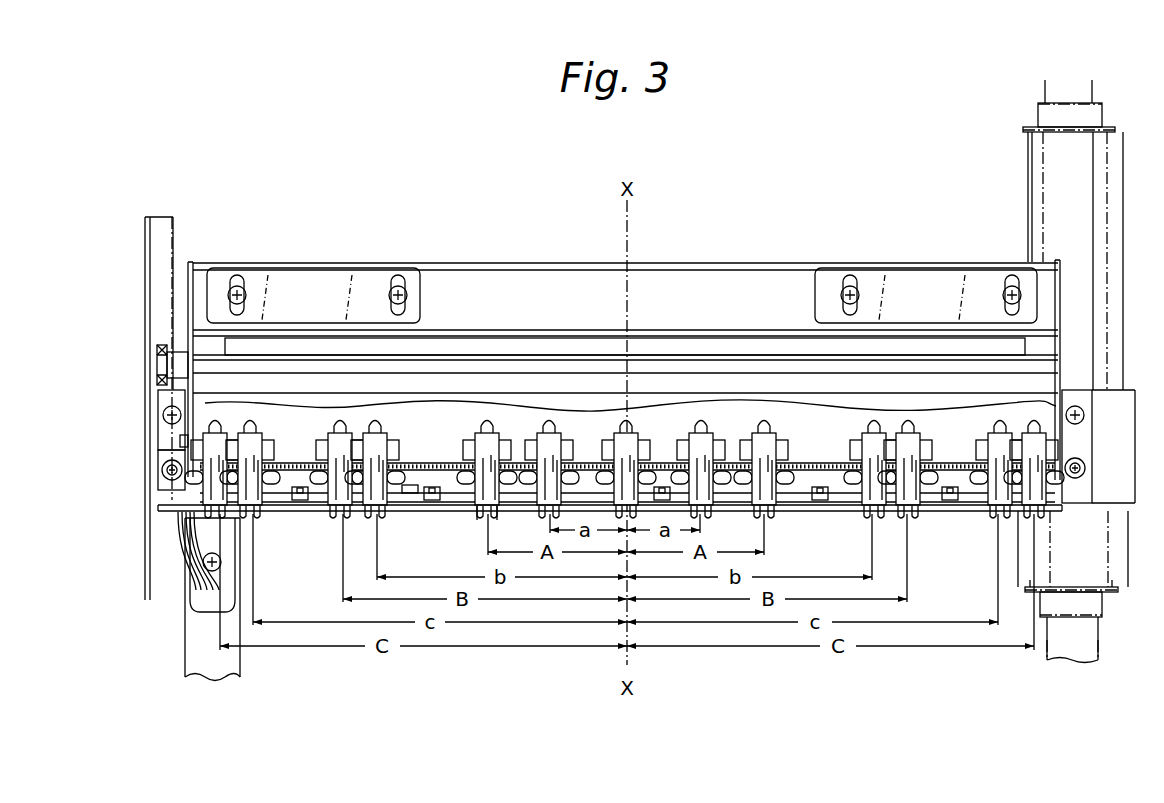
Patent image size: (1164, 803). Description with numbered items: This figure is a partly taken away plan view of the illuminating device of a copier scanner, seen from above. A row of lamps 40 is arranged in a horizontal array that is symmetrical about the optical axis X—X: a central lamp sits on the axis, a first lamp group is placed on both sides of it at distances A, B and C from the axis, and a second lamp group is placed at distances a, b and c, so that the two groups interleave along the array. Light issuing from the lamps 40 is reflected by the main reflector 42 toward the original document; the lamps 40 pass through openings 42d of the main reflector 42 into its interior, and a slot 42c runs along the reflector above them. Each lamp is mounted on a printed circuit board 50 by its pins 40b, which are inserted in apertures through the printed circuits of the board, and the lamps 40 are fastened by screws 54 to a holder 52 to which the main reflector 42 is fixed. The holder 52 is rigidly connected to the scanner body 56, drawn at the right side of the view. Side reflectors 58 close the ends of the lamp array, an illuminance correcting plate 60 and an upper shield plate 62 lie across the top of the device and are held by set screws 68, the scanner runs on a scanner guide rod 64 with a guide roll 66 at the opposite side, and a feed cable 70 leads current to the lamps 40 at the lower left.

The lamps 40 is at (218, 418).
The pins 40b is at (480, 511).
The main reflector 42 is at (823, 445).
The slot 42c is at (585, 342).
The openings 42d is at (515, 455).
The printed circuit board 50 is at (922, 515).
The holder 52 is at (410, 492).
The screws 54 is at (302, 515).
The scanner body 56 is at (1125, 212).
The side reflectors 58 is at (193, 293).
The illuminance correcting plate 60 is at (470, 282).
The upper shield plate 62 is at (765, 392).
The scanner guide rod 64 is at (1042, 654).
The guide roll 66 is at (168, 214).
The set screws 68 is at (851, 283).
The feed cable 70 is at (235, 666).